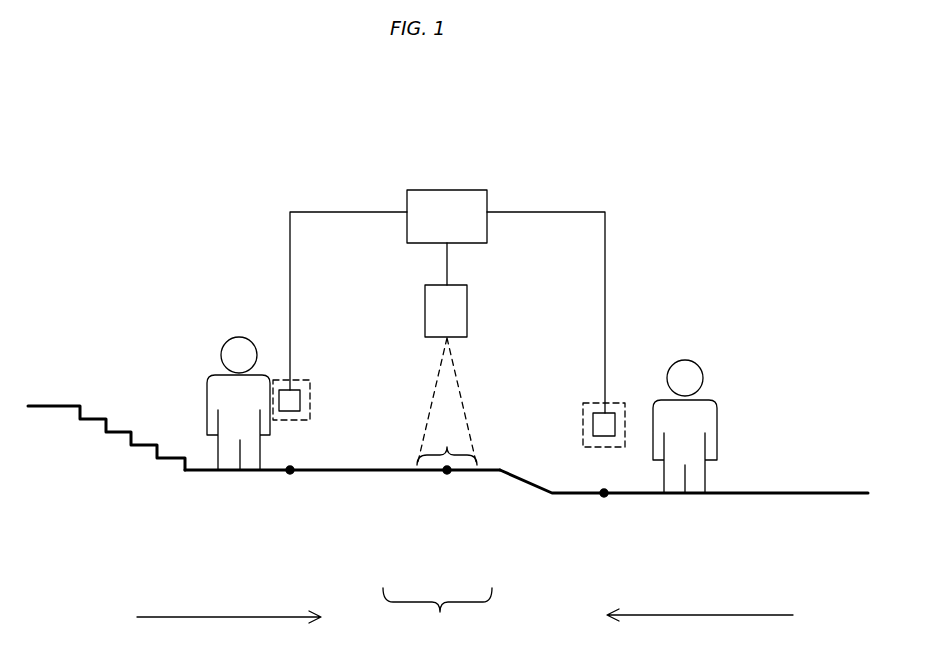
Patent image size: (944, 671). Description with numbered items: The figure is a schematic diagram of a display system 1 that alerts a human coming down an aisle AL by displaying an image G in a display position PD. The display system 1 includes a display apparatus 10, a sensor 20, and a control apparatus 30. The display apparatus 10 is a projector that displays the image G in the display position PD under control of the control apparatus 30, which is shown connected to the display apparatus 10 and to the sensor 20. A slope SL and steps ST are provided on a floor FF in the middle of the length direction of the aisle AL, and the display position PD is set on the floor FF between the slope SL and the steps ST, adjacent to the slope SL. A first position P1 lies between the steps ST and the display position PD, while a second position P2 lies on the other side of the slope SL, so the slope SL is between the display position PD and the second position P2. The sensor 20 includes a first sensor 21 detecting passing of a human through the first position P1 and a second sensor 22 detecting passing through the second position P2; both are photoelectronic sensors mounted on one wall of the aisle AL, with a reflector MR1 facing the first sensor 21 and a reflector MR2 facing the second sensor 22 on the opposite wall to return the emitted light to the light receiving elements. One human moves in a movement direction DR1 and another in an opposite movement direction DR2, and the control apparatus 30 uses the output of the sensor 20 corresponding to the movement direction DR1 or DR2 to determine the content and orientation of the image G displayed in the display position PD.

The display system 1 is at (758, 201).
The control apparatus 30 is at (442, 190).
The display apparatus 10 is at (467, 306).
The sensor 20 is at (437, 618).
The first sensor 21 is at (292, 412).
The second sensor 22 is at (593, 424).
The reflector MR1 is at (310, 412).
The reflector MR2 is at (583, 413).
The image G is at (447, 443).
The aisle AL is at (847, 384).
The steps ST is at (133, 440).
The floor FF is at (381, 468).
The slope SL is at (545, 492).
The first position P1 is at (296, 486).
The display position PD is at (453, 486).
The second position P2 is at (610, 509).
The movement direction DR1 is at (229, 606).
The movement direction DR2 is at (700, 605).